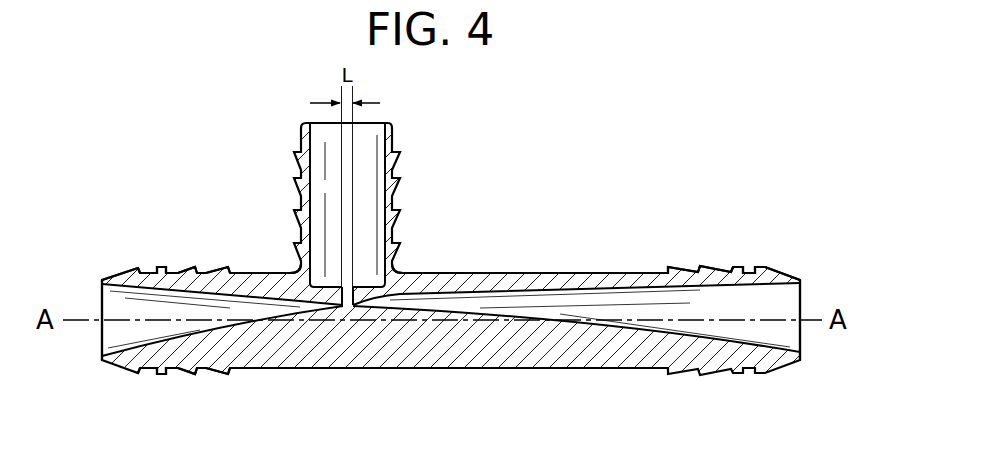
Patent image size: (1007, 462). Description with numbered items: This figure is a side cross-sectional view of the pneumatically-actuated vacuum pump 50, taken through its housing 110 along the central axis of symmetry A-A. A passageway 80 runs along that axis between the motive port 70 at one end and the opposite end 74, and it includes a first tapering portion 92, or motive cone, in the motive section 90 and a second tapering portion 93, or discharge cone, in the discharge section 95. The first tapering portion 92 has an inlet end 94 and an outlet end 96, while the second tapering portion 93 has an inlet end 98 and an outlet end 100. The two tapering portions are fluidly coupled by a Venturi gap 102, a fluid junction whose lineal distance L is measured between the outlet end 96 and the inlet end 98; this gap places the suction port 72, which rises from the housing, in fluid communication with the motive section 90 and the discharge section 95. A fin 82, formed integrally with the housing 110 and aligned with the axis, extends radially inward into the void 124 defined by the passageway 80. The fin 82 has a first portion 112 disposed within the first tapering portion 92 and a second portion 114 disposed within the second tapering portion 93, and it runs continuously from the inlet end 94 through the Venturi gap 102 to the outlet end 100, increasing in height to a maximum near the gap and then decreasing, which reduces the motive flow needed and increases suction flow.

The pneumatically-actuated vacuum pump 50 is at (636, 200).
The motive port 70 is at (101, 354).
The suction port 72 is at (376, 120).
The second end 74 is at (801, 342).
The passageway 80 is at (172, 303).
The fin 82 is at (500, 328).
The motive section 90 is at (139, 276).
The first tapering portion 92 is at (204, 307).
The second tapering portion 93 is at (717, 300).
The inlet end 94 is at (100, 293).
The discharge section 95 is at (668, 268).
The outlet end 96 is at (318, 302).
The inlet end 98 is at (398, 274).
The outlet end 100 is at (802, 288).
The Venturi gap 102 is at (349, 293).
The housing 110 is at (467, 278).
The first portion 112 is at (237, 367).
The second portion 114 is at (584, 348).
The void 124 is at (140, 330).